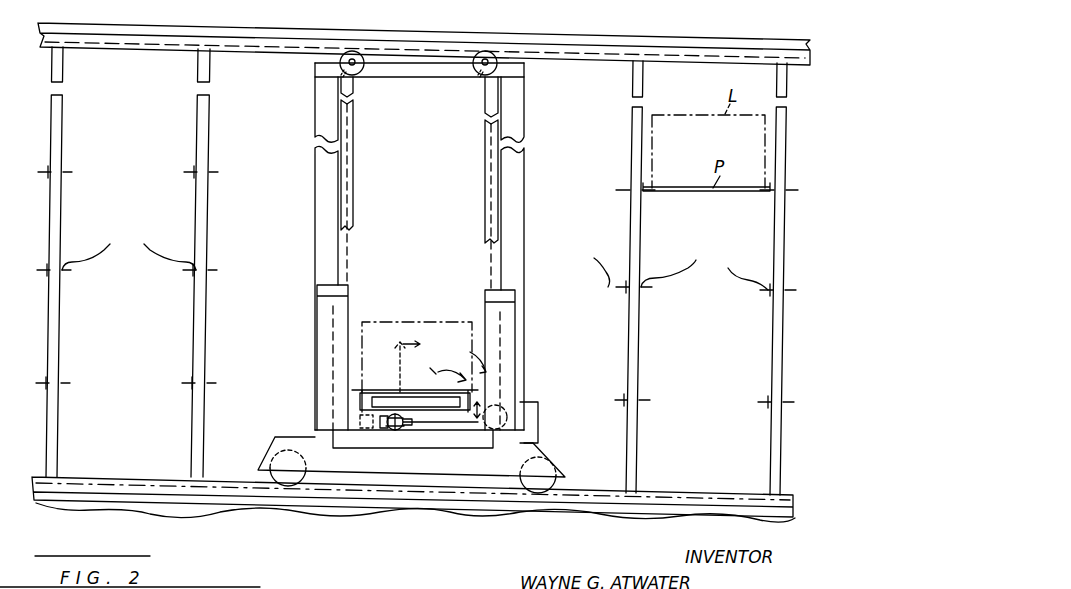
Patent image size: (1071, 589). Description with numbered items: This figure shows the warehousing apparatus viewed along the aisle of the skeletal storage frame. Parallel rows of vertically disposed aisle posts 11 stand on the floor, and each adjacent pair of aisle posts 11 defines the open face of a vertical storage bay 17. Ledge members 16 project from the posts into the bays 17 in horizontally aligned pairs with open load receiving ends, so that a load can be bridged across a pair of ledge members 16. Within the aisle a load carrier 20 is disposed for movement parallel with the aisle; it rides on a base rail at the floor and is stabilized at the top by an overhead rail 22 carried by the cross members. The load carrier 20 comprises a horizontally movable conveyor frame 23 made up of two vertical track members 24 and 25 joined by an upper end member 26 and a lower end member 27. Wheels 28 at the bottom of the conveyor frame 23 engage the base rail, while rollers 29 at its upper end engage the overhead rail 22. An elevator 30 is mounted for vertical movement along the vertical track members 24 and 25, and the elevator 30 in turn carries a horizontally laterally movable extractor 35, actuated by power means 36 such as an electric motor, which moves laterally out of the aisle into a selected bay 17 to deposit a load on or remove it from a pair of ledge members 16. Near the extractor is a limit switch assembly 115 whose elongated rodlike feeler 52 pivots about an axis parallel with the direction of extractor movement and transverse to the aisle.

The aisle posts 11 is at (65, 192).
The ledge members 16 is at (415, 261).
The vertical storage bay 17 is at (732, 442).
The load carrier 20 is at (549, 178).
The overhead rail 22 is at (592, 66).
The horizontally movable conveyor frame 23 is at (314, 86).
The vertical track member 24 is at (316, 226).
The vertical track member 25 is at (518, 223).
The upper end member 26 is at (432, 75).
The lower end member 27 is at (425, 470).
The wheels 28 is at (274, 480).
The rollers 29 is at (345, 55).
The elevator 30 is at (524, 283).
The extractor 35 is at (366, 410).
The power means 36 is at (504, 410).
The feeler 52 is at (462, 456).
The bearing 115 is at (393, 430).